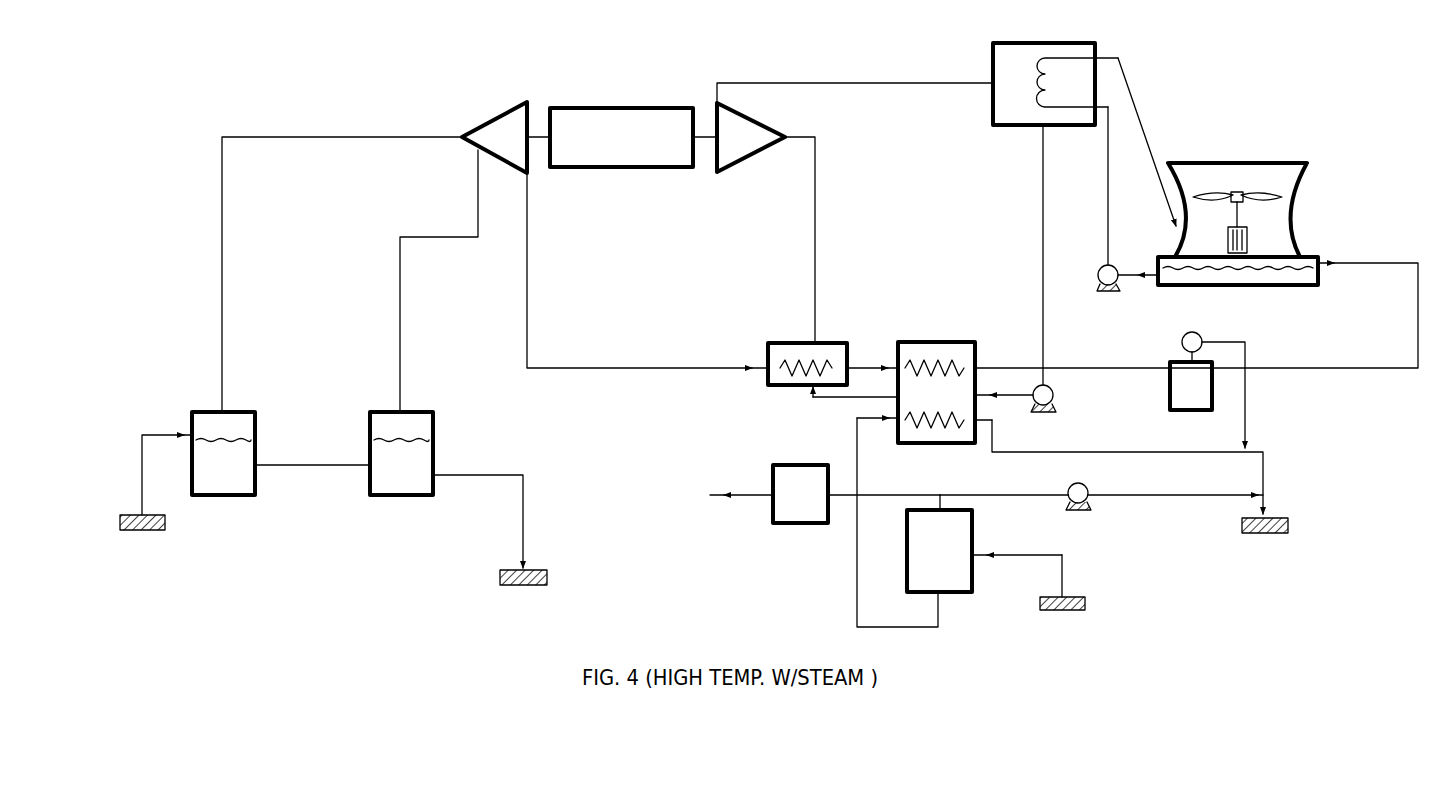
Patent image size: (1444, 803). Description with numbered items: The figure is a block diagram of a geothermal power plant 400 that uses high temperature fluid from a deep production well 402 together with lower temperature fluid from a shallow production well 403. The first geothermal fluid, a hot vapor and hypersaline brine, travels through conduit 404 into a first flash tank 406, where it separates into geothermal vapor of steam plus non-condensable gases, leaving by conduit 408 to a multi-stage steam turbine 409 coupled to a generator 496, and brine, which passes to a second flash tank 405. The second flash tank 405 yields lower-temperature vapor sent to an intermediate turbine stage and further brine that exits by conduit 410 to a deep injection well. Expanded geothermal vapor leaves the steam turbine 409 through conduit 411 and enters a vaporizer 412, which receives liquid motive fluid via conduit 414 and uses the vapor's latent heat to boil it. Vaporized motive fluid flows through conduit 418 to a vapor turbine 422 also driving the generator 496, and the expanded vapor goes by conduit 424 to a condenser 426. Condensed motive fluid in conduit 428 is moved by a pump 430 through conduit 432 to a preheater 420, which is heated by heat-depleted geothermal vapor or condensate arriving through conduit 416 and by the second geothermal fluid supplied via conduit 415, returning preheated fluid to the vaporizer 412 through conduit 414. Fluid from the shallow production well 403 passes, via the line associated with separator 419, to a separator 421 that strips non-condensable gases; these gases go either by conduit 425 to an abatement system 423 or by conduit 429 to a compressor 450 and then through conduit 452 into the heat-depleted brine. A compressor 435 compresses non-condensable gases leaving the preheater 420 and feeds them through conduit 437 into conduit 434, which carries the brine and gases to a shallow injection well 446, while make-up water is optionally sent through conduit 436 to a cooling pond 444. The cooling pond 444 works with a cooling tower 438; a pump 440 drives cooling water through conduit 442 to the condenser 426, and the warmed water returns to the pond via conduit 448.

The power plant 400 is at (190, 135).
The deep production well 402 is at (148, 522).
The shallow production well 403 is at (1066, 597).
The conduit 404 is at (143, 470).
The second flash tank 405 is at (433, 493).
The first flash tank 406 is at (246, 495).
The conduit 408 is at (222, 396).
The steam turbine 409 is at (478, 122).
The conduit 410 is at (593, 413).
The conduit 411 is at (600, 366).
The vaporizer 412 is at (768, 380).
The conduit 414 is at (842, 398).
The conduit 415 is at (880, 418).
The conduit 416 is at (846, 366).
The conduit 418 is at (815, 248).
The separator 419 is at (1062, 556).
The preheater 420 is at (946, 442).
The separator 421 is at (972, 589).
The vapor turbine 422 is at (754, 152).
The abatement system 423 is at (800, 465).
The conduit 424 is at (897, 83).
The conduit 425 is at (925, 492).
The condenser 426 is at (1094, 45).
The conduit 428 is at (1043, 197).
The conduit 429 is at (1012, 492).
The pump 430 is at (1055, 392).
The conduit 432 is at (1008, 397).
The conduit 434 is at (1265, 478).
The compressor 435 is at (1182, 343).
The conduit 436 is at (1350, 265).
The conduit 437 is at (1245, 421).
The cooling tower 438 is at (1293, 196).
The pump 440 is at (1098, 271).
The conduit 442 is at (1108, 205).
The cooling pond 444 is at (1226, 286).
The shallow injection well 446 is at (1278, 518).
The conduit 448 is at (1148, 121).
The compressor 450 is at (1068, 486).
The conduit 452 is at (1148, 490).
The generator 496 is at (600, 108).